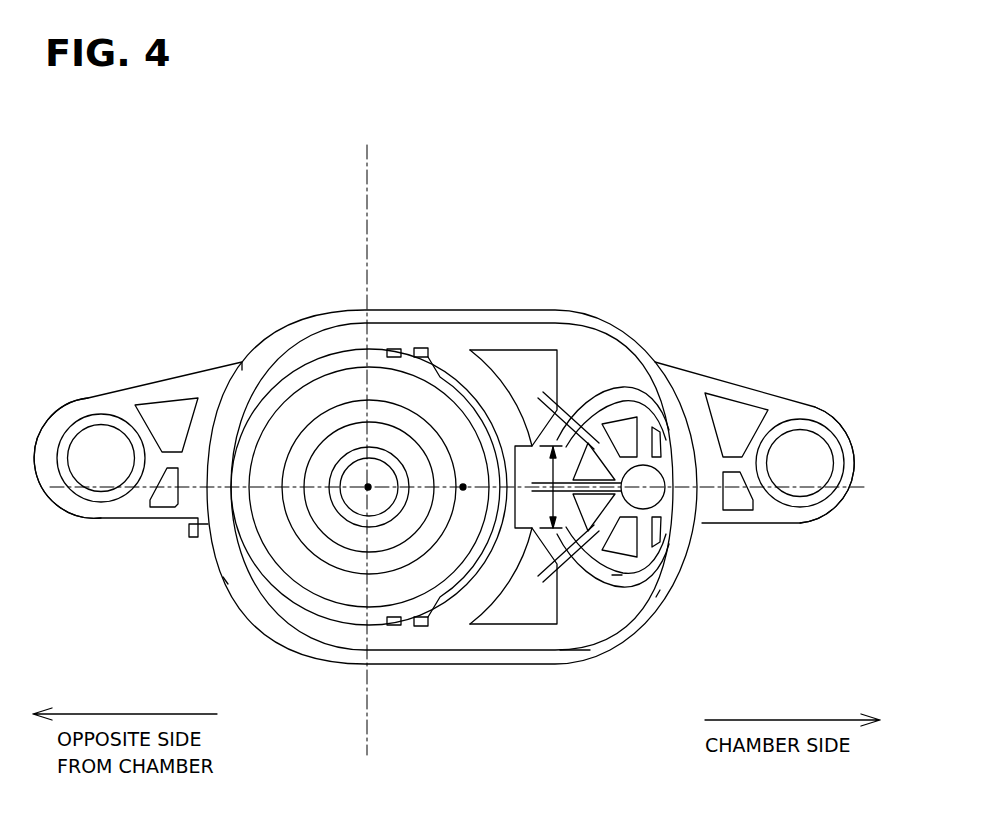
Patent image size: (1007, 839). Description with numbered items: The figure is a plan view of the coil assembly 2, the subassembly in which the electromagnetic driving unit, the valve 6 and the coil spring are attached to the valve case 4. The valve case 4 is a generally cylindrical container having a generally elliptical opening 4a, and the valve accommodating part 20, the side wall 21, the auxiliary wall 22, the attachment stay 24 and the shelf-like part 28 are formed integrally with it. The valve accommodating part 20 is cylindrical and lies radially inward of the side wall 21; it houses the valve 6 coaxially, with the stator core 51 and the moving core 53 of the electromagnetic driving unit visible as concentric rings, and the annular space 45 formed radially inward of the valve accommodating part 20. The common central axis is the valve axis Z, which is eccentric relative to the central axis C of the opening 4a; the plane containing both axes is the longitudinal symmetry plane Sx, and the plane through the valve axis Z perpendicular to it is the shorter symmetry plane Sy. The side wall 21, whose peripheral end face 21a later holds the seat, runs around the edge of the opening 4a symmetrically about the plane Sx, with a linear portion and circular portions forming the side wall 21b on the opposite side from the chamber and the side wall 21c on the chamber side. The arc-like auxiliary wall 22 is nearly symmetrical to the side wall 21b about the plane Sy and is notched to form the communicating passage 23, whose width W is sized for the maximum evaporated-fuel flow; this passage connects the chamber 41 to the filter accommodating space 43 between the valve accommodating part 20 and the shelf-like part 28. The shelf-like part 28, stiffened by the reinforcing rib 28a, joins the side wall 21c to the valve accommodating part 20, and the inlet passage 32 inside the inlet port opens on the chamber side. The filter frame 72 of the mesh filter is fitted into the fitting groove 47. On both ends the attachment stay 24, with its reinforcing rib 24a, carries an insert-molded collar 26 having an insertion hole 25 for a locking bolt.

The coil assembly 2 is at (222, 318).
The valve case 4 is at (735, 384).
The opening 4a is at (547, 357).
The valve 6 is at (356, 514).
The valve accommodating part 20 is at (385, 383).
The side wall 21 is at (283, 357).
The peripheral end face 21a is at (575, 652).
The side wall on the opposite side from the chamber 21b is at (223, 577).
The side wall on the chamber side 21c is at (656, 597).
The auxiliary wall 22 is at (508, 400).
The communicating passage 23 is at (570, 385).
The attachment stay 24 is at (108, 399).
The reinforcing rib 24a is at (165, 508).
The insertion hole 25 is at (80, 478).
The collar 26 is at (112, 501).
The shelf-like part 28 is at (588, 391).
The reinforcing rib 28a is at (617, 574).
The inlet passage 32 is at (645, 497).
The chamber 41 is at (612, 396).
The filter accommodating space 43 is at (470, 598).
The annular space 45 is at (305, 548).
The fitting groove 47 is at (420, 348).
The stator core 51 is at (355, 440).
The moving core 53 is at (337, 457).
The filter frame 72 is at (456, 372).
The width of the communicating passage W is at (548, 487).
The valve axis Z is at (370, 492).
The central axis of the opening C is at (466, 492).
The longitudinal symmetry plane Sx is at (858, 493).
The shorter symmetry plane Sy is at (383, 153).